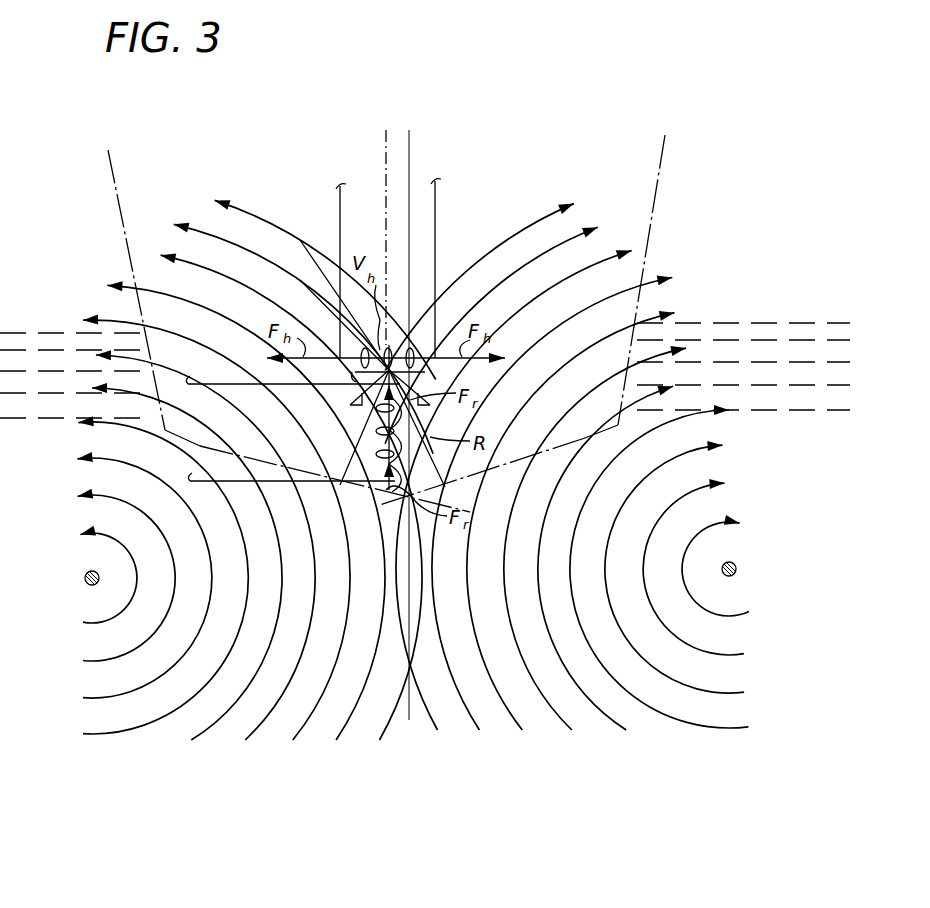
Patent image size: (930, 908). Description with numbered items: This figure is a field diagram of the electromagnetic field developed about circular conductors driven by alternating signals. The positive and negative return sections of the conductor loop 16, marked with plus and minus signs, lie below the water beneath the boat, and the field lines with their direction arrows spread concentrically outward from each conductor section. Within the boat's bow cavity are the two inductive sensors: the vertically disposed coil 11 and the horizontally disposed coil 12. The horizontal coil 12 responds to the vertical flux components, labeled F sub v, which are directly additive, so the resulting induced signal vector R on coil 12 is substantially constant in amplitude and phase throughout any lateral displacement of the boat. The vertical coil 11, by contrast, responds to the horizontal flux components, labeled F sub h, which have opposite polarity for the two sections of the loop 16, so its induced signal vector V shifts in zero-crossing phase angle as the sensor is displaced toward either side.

The vertically disposed inductive sensor or coil 11 is at (435, 207).
The horizontally disposed inductive sensor or coil 12 is at (350, 484).
The conductor loop 16 is at (86, 573).